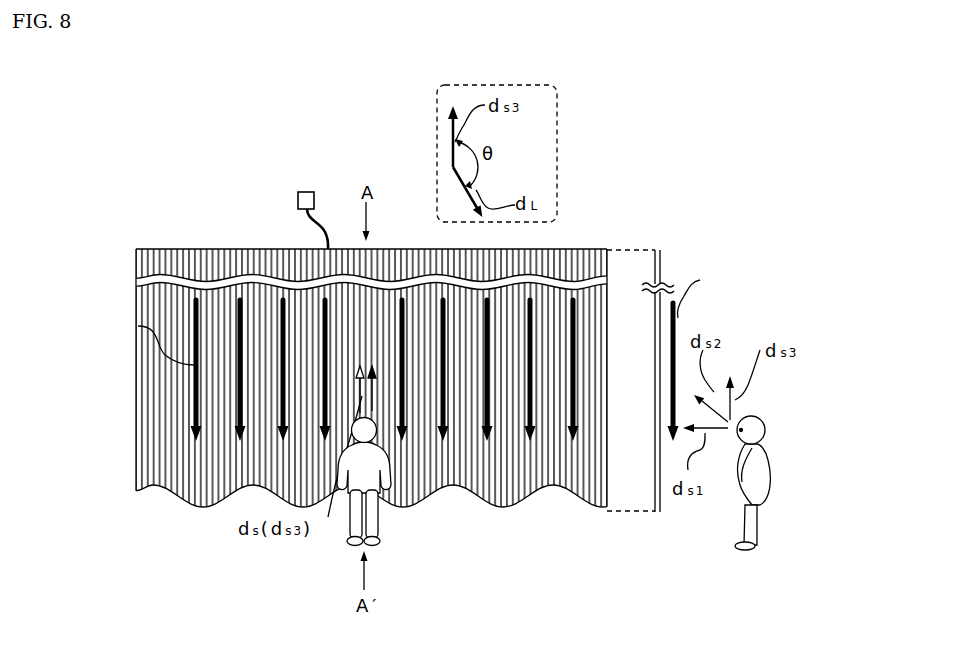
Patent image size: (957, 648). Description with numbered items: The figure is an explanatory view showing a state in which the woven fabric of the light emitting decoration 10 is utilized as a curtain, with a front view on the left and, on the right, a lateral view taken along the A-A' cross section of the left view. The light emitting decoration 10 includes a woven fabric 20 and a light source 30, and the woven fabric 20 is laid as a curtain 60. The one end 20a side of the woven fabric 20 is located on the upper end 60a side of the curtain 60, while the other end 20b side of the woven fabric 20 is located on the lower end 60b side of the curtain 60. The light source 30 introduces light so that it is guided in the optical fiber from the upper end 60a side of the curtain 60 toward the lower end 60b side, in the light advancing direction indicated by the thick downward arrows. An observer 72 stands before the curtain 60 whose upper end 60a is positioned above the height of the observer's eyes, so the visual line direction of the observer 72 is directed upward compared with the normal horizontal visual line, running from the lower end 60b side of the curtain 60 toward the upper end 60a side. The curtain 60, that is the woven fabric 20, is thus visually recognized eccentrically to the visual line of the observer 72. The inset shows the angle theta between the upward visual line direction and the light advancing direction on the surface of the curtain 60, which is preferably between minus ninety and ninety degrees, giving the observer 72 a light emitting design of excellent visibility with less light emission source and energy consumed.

The light emitting decoration 10 is at (358, 135).
The woven fabric 20 is at (244, 262).
The one end of the woven fabric 20a is at (172, 249).
The other end of the woven fabric 20b is at (192, 503).
The light source 30 is at (307, 192).
The curtain 60 is at (445, 488).
The upper end of the curtain 60a is at (153, 249).
The lower end of the curtain 60b is at (170, 493).
The observer 72 is at (378, 522).